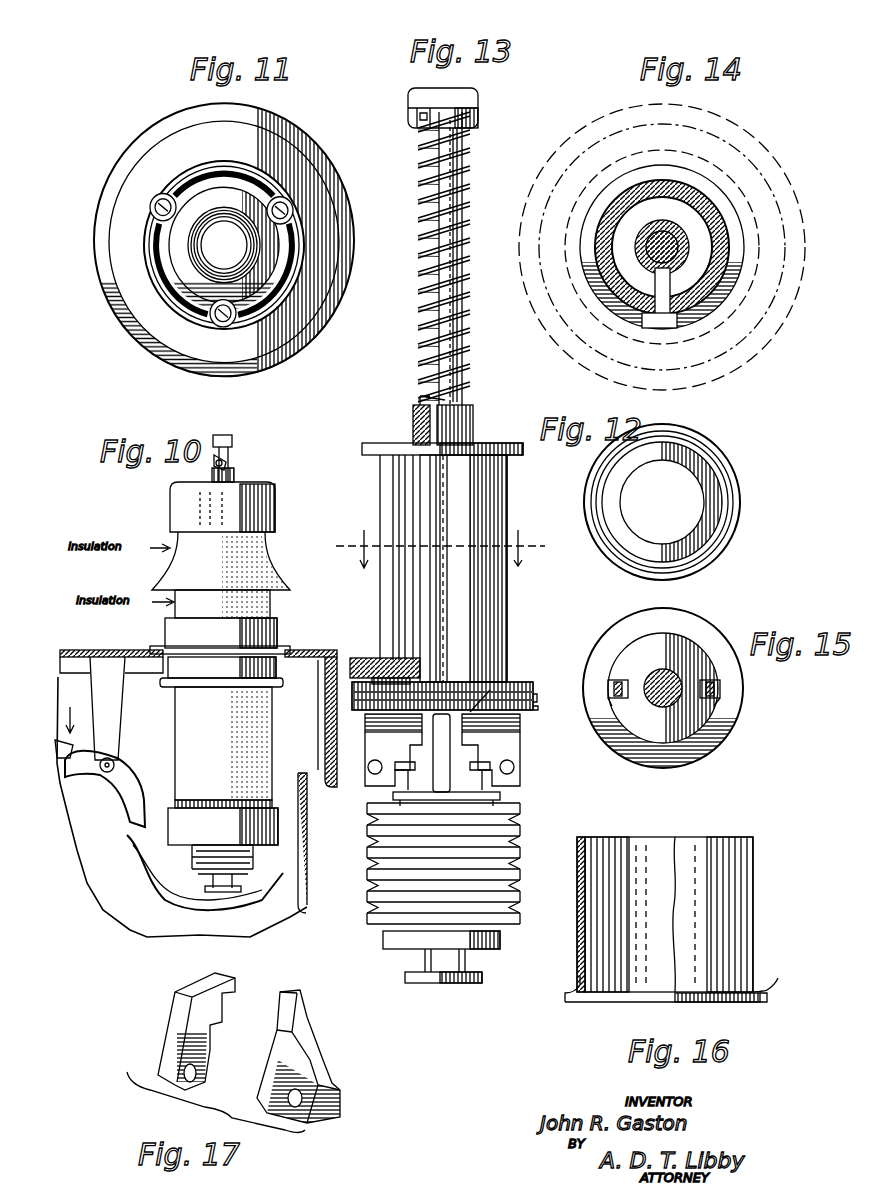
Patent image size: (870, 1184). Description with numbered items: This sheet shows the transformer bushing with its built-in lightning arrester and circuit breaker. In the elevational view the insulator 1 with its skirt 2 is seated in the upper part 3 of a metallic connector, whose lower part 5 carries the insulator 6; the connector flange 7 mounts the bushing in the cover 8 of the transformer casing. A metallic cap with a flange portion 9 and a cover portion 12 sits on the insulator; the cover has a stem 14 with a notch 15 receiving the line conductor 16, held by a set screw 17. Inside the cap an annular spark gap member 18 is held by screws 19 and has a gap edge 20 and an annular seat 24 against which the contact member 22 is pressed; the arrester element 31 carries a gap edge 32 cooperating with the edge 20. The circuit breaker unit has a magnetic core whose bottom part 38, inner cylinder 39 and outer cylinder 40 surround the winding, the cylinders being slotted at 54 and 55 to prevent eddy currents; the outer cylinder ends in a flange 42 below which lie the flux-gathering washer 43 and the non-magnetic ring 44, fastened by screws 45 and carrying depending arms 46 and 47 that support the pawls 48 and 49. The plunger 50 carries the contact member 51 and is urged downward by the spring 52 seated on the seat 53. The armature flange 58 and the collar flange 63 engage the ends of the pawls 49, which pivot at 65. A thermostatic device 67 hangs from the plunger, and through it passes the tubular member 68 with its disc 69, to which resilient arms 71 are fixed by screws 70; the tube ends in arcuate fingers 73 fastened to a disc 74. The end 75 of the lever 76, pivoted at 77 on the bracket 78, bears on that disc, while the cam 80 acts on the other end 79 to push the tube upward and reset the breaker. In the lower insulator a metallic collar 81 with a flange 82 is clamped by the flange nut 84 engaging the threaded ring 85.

In FIG. 10, the insulator 1 is at (272, 610).
In FIG. 10, the skirt 2 is at (290, 598).
In FIG. 10, the upper part of metallic connector 3 is at (168, 624).
In FIG. 10, the lower part of metallic connector 5 is at (292, 690).
In FIG. 10, the insulator 6 is at (268, 736).
In FIG. 10, the flange 7 is at (155, 648).
In FIG. 10, the cover 8 is at (322, 655).
In FIG. 10, the flange portion of cap 9 is at (272, 518).
In FIG. 11, the cover portion of cap 12 is at (347, 280).
In FIG. 10, the cover portion of cap 12 is at (265, 494).
In FIG. 13, the projection or stem 14 is at (440, 541).
In FIG. 10, the notch 15 is at (236, 476).
In FIG. 13, the line conductor 16 is at (343, 800).
In FIG. 10, the line conductor 16 is at (232, 462).
In FIG. 10, the set screw 17 is at (232, 440).
In FIG. 11, the annular metallic spark gap member 18 is at (328, 229).
In FIG. 11, the screws 19 is at (158, 205).
In FIG. 11, the annular spark gap edge 20 is at (290, 292).
In FIG. 11, the circuit contact member 22 is at (200, 250).
In FIG. 11, the annular seat 24 is at (180, 247).
In FIG. 12, the annular double-contact spark gap member 31 is at (700, 456).
In FIG. 12, the gap edge 32 is at (728, 468).
In FIG. 13, the bottom part of core member 38 is at (375, 456).
In FIG. 14, the inner cylinder of core 39 is at (664, 225).
In FIG. 13, the outer cylinder of core 40 is at (498, 646).
In FIG. 14, the outer cylinder of core 40 is at (682, 192).
In FIG. 13, the flange 42 is at (534, 690).
In FIG. 13, the flux-gathering washer 43 is at (536, 697).
In FIG. 13, the annular ring 44 is at (537, 707).
In FIG. 13, the screws 45 is at (368, 726).
In FIG. 13, the arms 46 is at (386, 777).
In FIG. 13, the arms 47 is at (400, 778).
In FIG. 13, the pawls 48 is at (370, 762).
In FIG. 17, the pawls 48 is at (178, 1021).
In FIG. 13, the pawls 49 is at (378, 830).
In FIG. 17, the pawls 49 is at (312, 1048).
In FIG. 13, the plunger 50 is at (462, 182).
In FIG. 14, the plunger 50 is at (683, 230).
In FIG. 15, the plunger 50 is at (667, 672).
In FIG. 13, the contact member 51 is at (416, 101).
In FIG. 13, the spring 52 is at (470, 229).
In FIG. 13, the seat 53 is at (472, 425).
In FIG. 13, the slot 54 is at (382, 668).
In FIG. 14, the slot 54 is at (652, 322).
In FIG. 13, the slot 55 is at (400, 497).
In FIG. 14, the slot 55 is at (666, 318).
In FIG. 13, the annular flange of armature 58 is at (492, 688).
In FIG. 13, the flange of collar 63 is at (442, 753).
In FIG. 13, the pivot 65 is at (570, 785).
In FIG. 13, the thermostatic device 67 is at (516, 836).
In FIG. 10, the thermostatic device 67 is at (200, 860).
In FIG. 15, the thermostatic device 67 is at (650, 770).
In FIG. 13, the tubular member 68 is at (380, 870).
In FIG. 13, the annular disc 69 is at (500, 798).
In FIG. 15, the annular disc 69 is at (725, 720).
In FIG. 13, the screws 70 is at (512, 822).
In FIG. 15, the screws 70 is at (708, 704).
In FIG. 15, the arms 71 is at (618, 678).
In FIG. 13, the arcuate fingers 73 is at (430, 962).
In FIG. 10, the arcuate fingers 73 is at (216, 888).
In FIG. 13, the disc 74 is at (484, 980).
In FIG. 10, the disc 74 is at (250, 880).
In FIG. 10, the end of lever 75 is at (235, 905).
In FIG. 10, the lever 76 is at (135, 862).
In FIG. 10, the pivot 77 is at (115, 762).
In FIG. 10, the arm or bracket 78 is at (118, 733).
In FIG. 10, the end of lever 79 is at (80, 778).
In FIG. 10, the cam member 80 is at (67, 720).
In FIG. 16, the metallic collar 81 is at (720, 838).
In FIG. 16, the flange 82 is at (771, 974).
In FIG. 10, the flange nut 84 is at (273, 815).
In FIG. 10, the threaded ring 85 is at (270, 760).